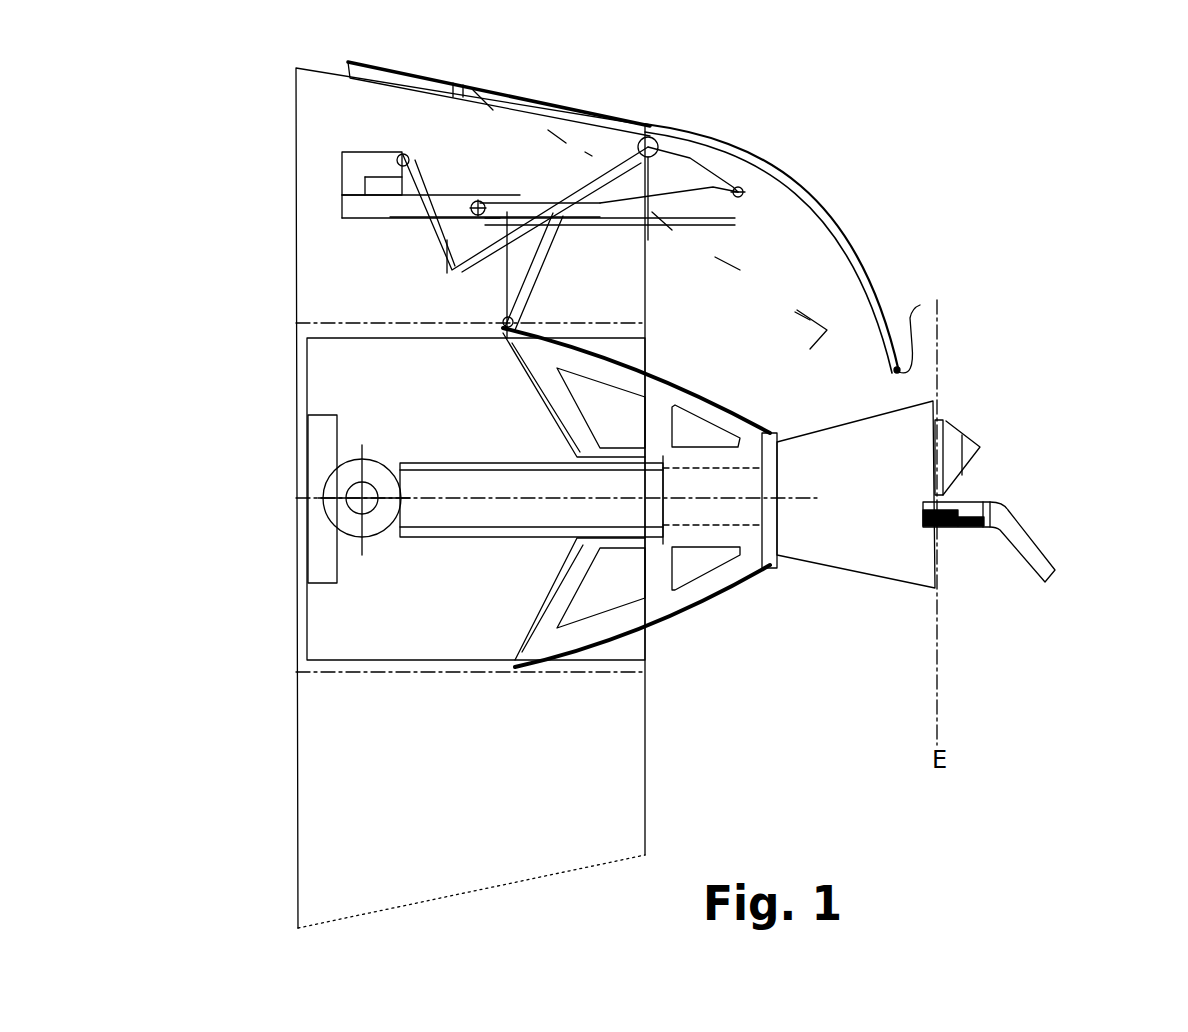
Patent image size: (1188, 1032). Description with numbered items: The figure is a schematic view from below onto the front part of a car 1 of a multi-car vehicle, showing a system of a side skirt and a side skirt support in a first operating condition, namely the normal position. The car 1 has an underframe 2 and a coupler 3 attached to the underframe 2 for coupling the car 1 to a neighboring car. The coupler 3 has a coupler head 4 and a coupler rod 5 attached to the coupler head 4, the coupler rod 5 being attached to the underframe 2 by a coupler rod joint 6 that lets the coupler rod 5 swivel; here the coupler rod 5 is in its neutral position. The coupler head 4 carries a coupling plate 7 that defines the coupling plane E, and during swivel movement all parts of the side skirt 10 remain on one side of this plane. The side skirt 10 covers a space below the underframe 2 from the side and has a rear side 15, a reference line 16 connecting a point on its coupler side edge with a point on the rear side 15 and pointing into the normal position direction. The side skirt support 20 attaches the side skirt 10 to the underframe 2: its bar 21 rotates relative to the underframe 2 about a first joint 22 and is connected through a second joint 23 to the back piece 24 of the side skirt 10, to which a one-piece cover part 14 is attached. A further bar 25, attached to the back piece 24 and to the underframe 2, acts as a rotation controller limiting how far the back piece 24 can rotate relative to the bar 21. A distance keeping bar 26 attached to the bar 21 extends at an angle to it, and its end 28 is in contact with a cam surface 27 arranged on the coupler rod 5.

The car 1 is at (960, 160).
The underframe 2 is at (332, 278).
The coupler 3 is at (1068, 462).
The coupler head 4 is at (866, 560).
The coupler rod 5 is at (480, 520).
The coupler rod joint 6 is at (362, 515).
The coupling plate 7 is at (943, 413).
The side skirt 10 is at (823, 222).
The cover part 14 is at (793, 184).
The rear side 15 is at (453, 85).
The reference line 16 is at (812, 349).
The side skirt support 20 is at (423, 300).
The bar 21 is at (607, 220).
The first joint 22 is at (480, 204).
The second joint 23 is at (742, 198).
The back piece 24 is at (713, 167).
The further bar 25 is at (477, 245).
The distance keeping bar 26 is at (538, 268).
The cam surface 27 is at (678, 382).
The end 28 is at (518, 312).